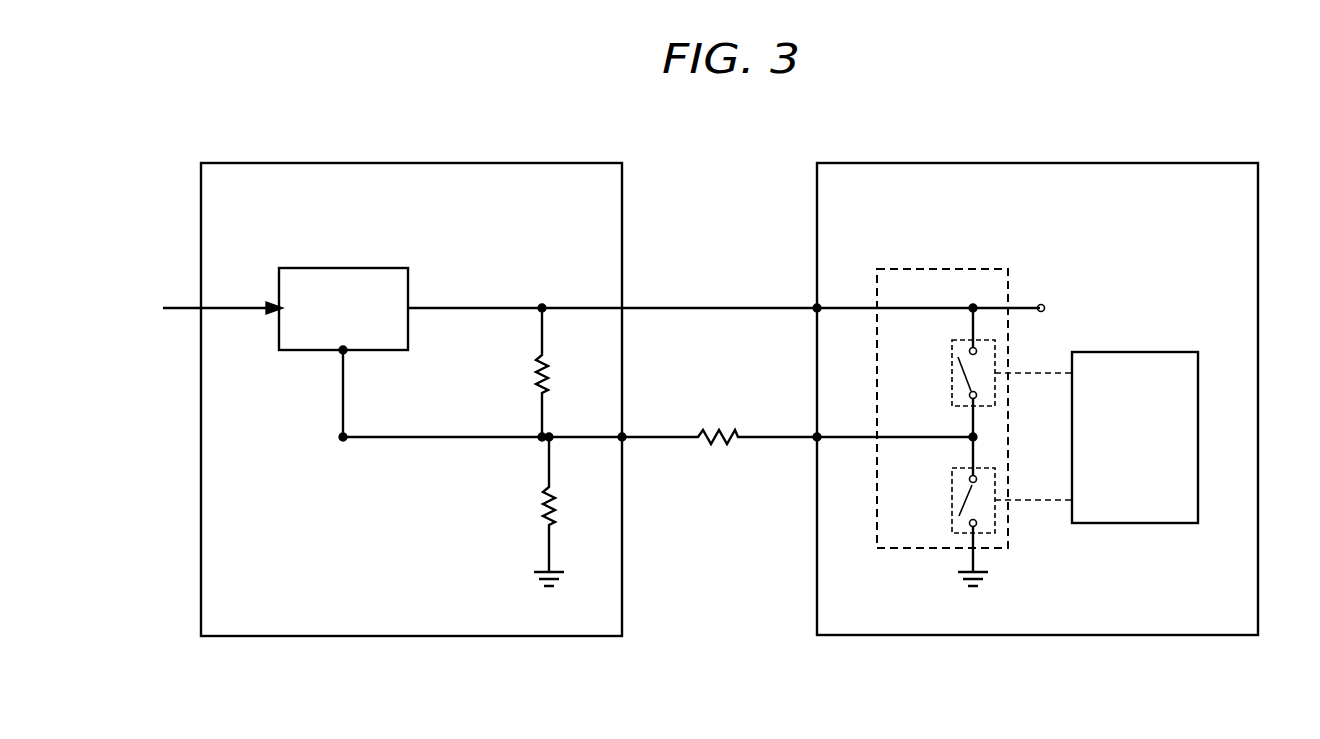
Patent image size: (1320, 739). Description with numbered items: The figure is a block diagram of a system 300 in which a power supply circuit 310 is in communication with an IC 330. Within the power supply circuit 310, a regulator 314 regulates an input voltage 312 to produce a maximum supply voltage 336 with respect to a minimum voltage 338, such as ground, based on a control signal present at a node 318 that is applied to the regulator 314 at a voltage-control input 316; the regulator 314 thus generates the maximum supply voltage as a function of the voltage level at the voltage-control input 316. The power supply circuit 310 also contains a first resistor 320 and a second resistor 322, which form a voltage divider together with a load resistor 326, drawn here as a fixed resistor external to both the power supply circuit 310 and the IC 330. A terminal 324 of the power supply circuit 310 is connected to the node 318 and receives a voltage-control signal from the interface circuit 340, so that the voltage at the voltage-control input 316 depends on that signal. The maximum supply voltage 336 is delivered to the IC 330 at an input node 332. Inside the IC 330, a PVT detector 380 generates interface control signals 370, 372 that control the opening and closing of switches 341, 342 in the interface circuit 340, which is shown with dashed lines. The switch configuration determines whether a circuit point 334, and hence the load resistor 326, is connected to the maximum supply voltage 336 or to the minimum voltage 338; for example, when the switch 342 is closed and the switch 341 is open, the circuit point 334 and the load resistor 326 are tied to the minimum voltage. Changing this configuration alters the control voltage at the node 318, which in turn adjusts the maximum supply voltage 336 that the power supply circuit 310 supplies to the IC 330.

The system 300 is at (451, 135).
The power supply circuit 310 is at (548, 163).
The input voltage V1 312 is at (233, 312).
The regulator 314 is at (345, 268).
The voltage-control input 316 is at (338, 356).
The node 318 is at (326, 463).
The resistor R1 320 is at (534, 372).
The resistor R2 322 is at (534, 497).
The terminal 324 is at (624, 441).
The load resistor Radapt 326 is at (716, 444).
The IC 330 is at (1205, 163).
The input node 332 is at (814, 305).
The circuit point 334 is at (814, 441).
The maximum voltage Vdd 336 is at (1083, 298).
The minimum voltage 338 is at (989, 572).
The interface circuit 340 is at (942, 268).
The switch 341 is at (951, 373).
The switch 342 is at (951, 498).
The interface control signal 370 is at (1039, 376).
The interface control signal 372 is at (1047, 497).
The PVT detector 380 is at (1138, 352).